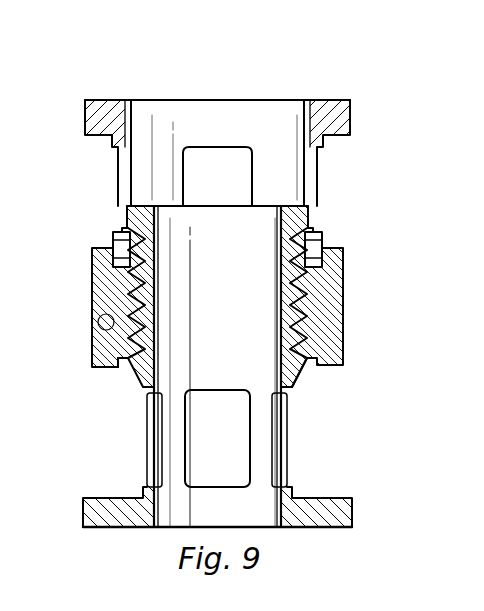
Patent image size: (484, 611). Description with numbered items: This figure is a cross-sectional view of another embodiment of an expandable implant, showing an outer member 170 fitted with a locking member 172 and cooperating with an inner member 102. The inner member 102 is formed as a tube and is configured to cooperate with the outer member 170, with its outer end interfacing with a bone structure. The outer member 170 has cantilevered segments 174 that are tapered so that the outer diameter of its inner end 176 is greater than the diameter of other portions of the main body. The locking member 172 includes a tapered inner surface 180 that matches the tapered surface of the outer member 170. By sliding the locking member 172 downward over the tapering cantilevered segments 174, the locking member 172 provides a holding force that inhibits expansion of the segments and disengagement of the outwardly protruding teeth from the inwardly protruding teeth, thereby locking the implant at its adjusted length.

The outer member 170 is at (232, 99).
The locking member 172 is at (351, 259).
The tapered inner surface 180 is at (98, 321).
The inner end 176 is at (111, 371).
The cantilevered segments 174 is at (314, 352).
The inner member 102 is at (76, 520).